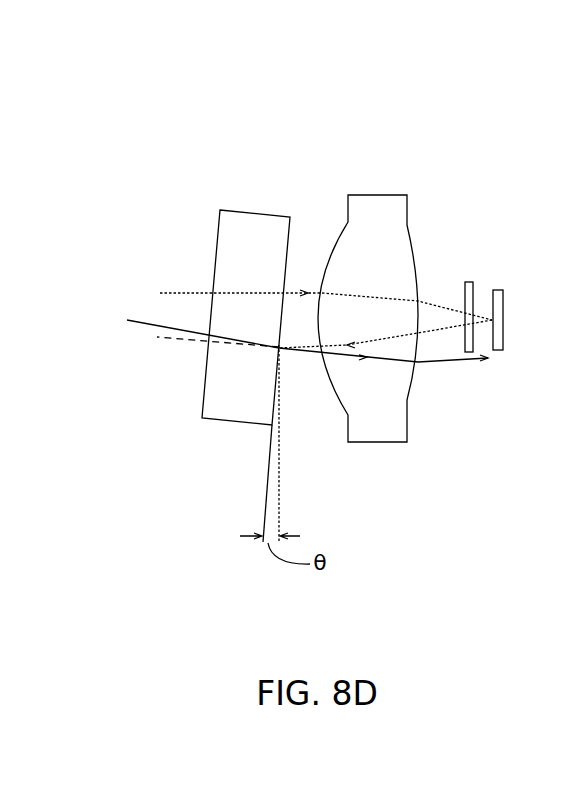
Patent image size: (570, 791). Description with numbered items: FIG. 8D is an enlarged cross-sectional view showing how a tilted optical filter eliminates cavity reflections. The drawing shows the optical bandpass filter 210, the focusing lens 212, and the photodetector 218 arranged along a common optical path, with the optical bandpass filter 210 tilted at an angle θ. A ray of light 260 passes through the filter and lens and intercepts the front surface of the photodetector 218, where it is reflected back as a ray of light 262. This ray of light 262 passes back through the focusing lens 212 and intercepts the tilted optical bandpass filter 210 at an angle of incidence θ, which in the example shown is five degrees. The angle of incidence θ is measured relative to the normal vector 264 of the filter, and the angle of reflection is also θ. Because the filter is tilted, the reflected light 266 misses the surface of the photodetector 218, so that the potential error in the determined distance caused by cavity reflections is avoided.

The optical bandpass filter 210 is at (244, 208).
The focusing lens 212 is at (365, 195).
The photodetector 218 is at (493, 288).
The ray of light 260 is at (185, 287).
The ray of light 262 is at (433, 332).
The normal vector 264 is at (175, 341).
The reflected light 266 is at (447, 364).